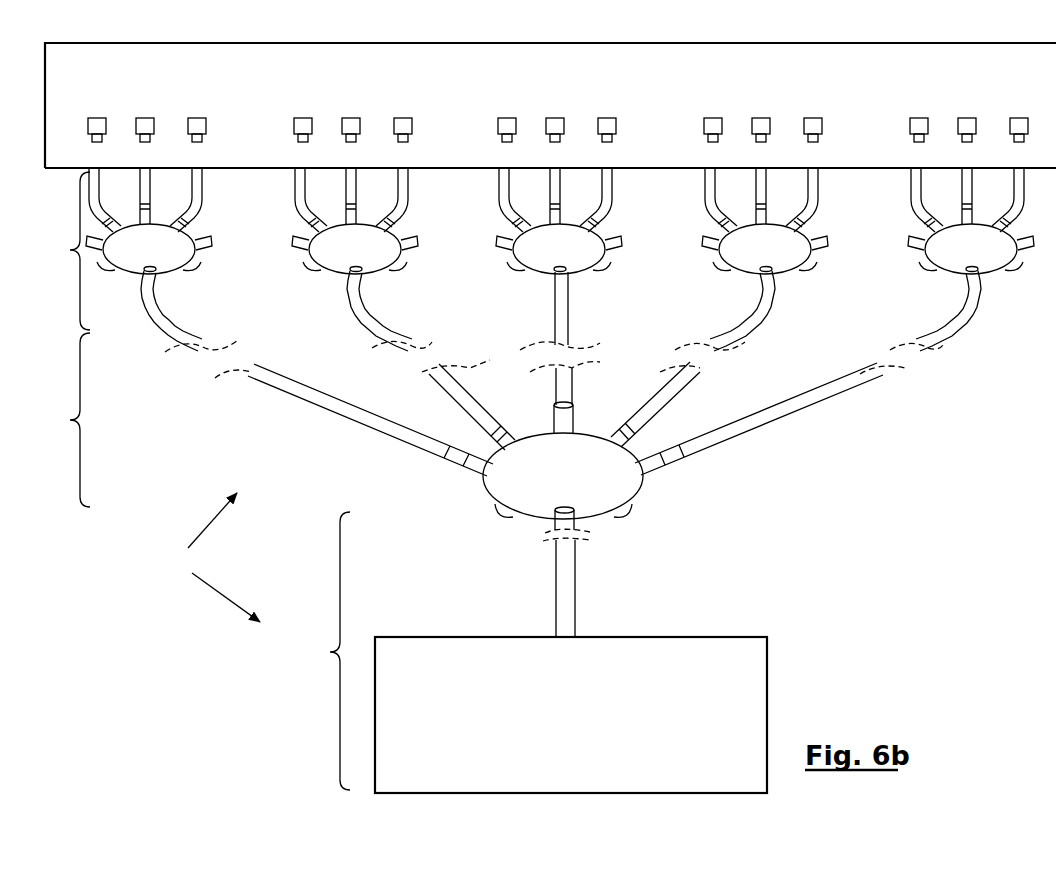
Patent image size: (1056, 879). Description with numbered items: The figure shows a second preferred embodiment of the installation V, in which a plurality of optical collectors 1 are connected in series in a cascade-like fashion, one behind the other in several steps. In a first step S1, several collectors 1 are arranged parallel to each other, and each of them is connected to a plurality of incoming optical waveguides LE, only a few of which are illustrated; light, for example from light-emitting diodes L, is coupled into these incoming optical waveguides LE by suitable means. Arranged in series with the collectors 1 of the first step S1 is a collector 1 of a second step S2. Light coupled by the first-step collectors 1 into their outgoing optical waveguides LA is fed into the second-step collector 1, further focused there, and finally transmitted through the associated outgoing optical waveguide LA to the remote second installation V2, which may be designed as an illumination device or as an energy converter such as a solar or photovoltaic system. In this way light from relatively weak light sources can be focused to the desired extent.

The optical collector 1 is at (196, 262).
The light source L is at (195, 116).
The incoming optical waveguides LE is at (408, 180).
The outgoing optical waveguide LA is at (565, 312).
The first step S1 is at (0, 228).
The second step S2 is at (0, 365).
The installation V is at (215, 557).
The second installation V2 is at (314, 651).